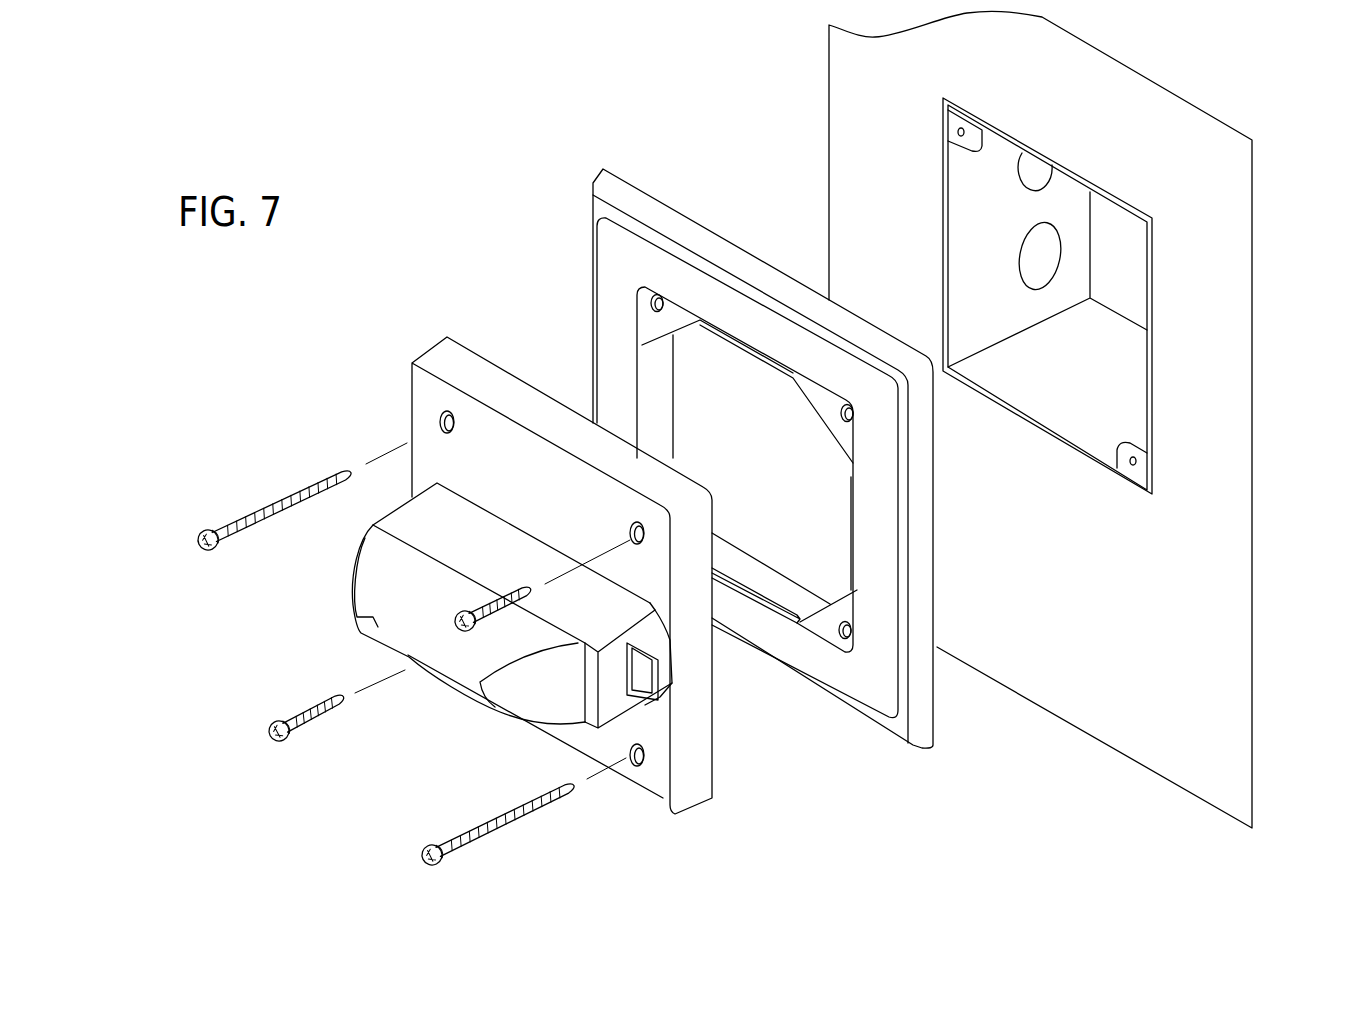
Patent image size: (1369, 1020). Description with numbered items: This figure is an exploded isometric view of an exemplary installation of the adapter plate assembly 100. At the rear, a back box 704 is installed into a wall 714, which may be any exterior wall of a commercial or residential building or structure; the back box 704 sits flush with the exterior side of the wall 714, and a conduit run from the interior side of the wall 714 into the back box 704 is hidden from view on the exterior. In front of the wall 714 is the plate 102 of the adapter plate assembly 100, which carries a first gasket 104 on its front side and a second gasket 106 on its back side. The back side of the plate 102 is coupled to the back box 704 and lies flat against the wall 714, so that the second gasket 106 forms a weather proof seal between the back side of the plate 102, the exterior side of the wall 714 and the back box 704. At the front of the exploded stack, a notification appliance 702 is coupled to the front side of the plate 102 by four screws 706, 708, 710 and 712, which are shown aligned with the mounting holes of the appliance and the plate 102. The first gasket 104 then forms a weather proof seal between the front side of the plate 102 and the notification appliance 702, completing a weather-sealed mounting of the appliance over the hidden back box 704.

The adapter plate assembly 100 is at (624, 108).
The plate 102 is at (587, 207).
The first gasket 104 is at (840, 705).
The second gasket 106 is at (763, 582).
The notification appliance 702 is at (406, 405).
The back box 704 is at (1055, 163).
The screw 706 is at (305, 702).
The screw 708 is at (512, 592).
The screw 710 is at (237, 519).
The screw 712 is at (536, 815).
The wall 714 is at (1207, 108).